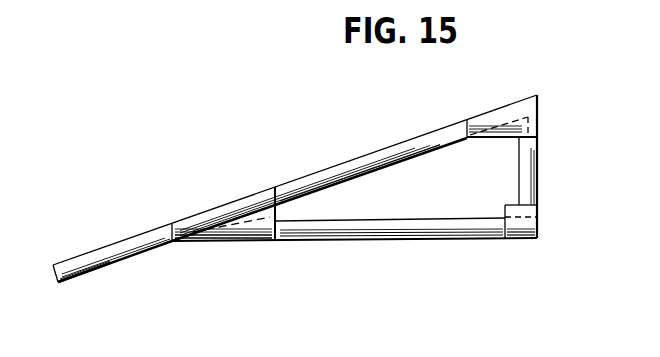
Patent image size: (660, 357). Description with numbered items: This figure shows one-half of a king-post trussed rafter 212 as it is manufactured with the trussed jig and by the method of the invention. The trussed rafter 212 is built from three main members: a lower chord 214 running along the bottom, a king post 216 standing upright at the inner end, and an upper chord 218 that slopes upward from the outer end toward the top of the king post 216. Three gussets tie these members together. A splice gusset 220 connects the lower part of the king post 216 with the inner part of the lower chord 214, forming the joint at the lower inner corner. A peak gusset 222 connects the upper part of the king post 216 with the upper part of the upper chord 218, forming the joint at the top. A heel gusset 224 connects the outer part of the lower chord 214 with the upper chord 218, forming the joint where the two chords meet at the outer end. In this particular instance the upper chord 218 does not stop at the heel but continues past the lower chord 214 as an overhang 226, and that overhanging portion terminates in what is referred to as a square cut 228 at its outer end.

The trussed rafter 212 is at (446, 121).
The lower chord 214 is at (465, 232).
The king post 216 is at (532, 170).
The upper chord 218 is at (383, 155).
The splice gusset 220 is at (538, 236).
The peak gusset 222 is at (532, 126).
The heel gusset 224 is at (274, 242).
The overhang 226 is at (128, 242).
The square cut 228 is at (58, 278).